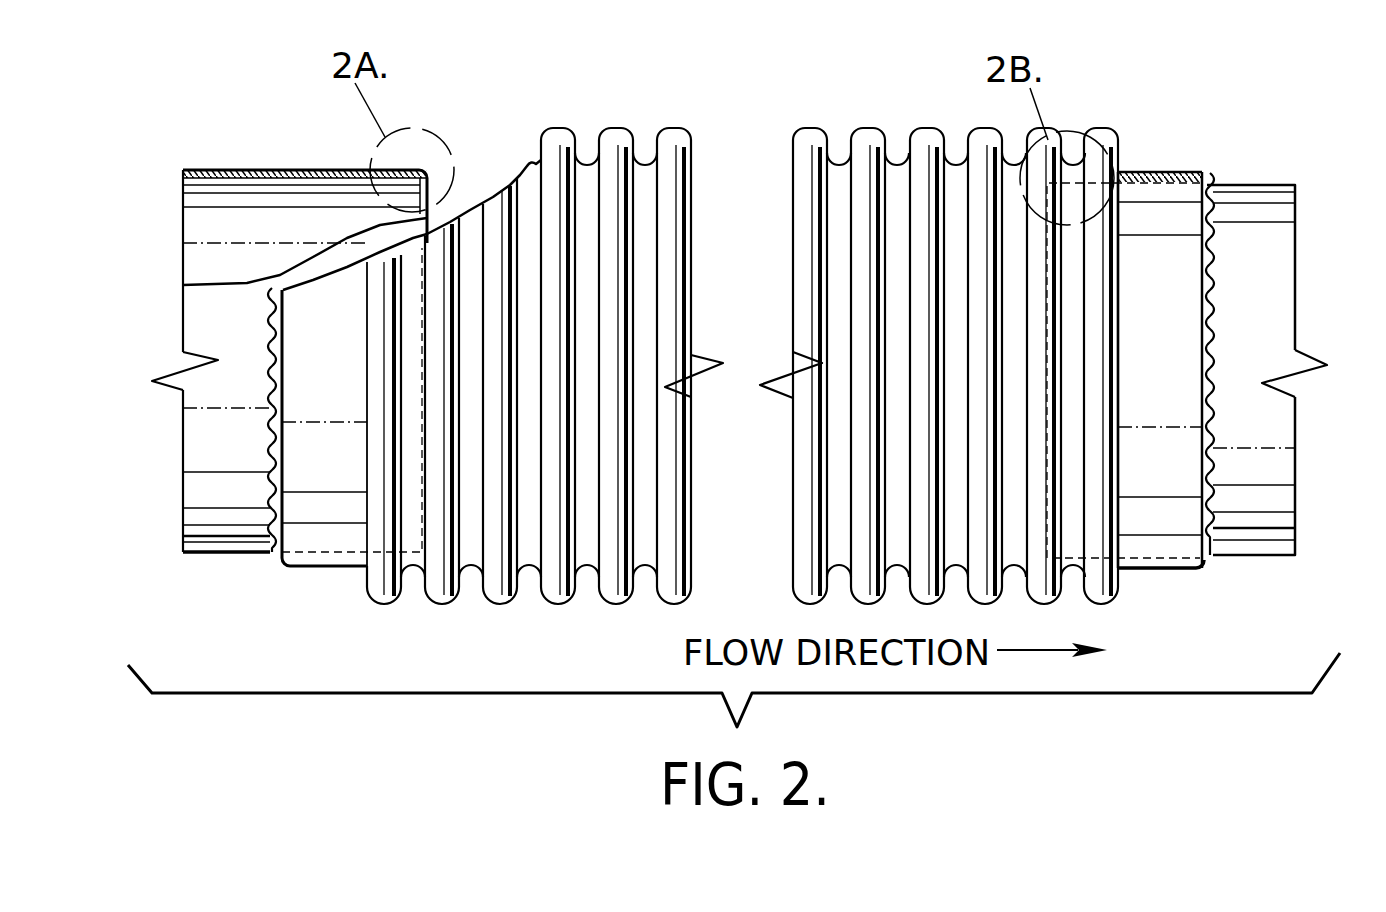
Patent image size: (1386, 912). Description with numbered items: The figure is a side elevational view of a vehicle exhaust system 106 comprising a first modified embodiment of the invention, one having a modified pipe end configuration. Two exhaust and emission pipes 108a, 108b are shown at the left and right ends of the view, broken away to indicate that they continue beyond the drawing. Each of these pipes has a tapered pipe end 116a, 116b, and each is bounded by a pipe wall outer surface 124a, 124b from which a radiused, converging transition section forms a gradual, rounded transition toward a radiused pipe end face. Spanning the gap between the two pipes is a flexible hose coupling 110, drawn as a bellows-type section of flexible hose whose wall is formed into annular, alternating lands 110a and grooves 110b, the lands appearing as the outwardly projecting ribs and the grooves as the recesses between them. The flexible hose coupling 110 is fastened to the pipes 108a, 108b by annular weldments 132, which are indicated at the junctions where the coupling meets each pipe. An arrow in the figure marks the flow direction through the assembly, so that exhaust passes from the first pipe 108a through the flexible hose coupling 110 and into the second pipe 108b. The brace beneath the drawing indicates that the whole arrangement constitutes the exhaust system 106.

The exhaust system 106 is at (288, 122).
The flexible hose coupling 110 is at (568, 130).
The lands 110a is at (797, 135).
The grooves 110b is at (467, 580).
The pipe wall outer surface 124a is at (252, 328).
The pipe wall outer surface 124b is at (1283, 322).
The exhaust and emission pipe 108a is at (255, 452).
The exhaust and emission pipe 108b is at (1285, 438).
The annular weldments 132 is at (262, 382).
The tapered pipe end 116a is at (180, 417).
The tapered pipe end 116b is at (1340, 473).